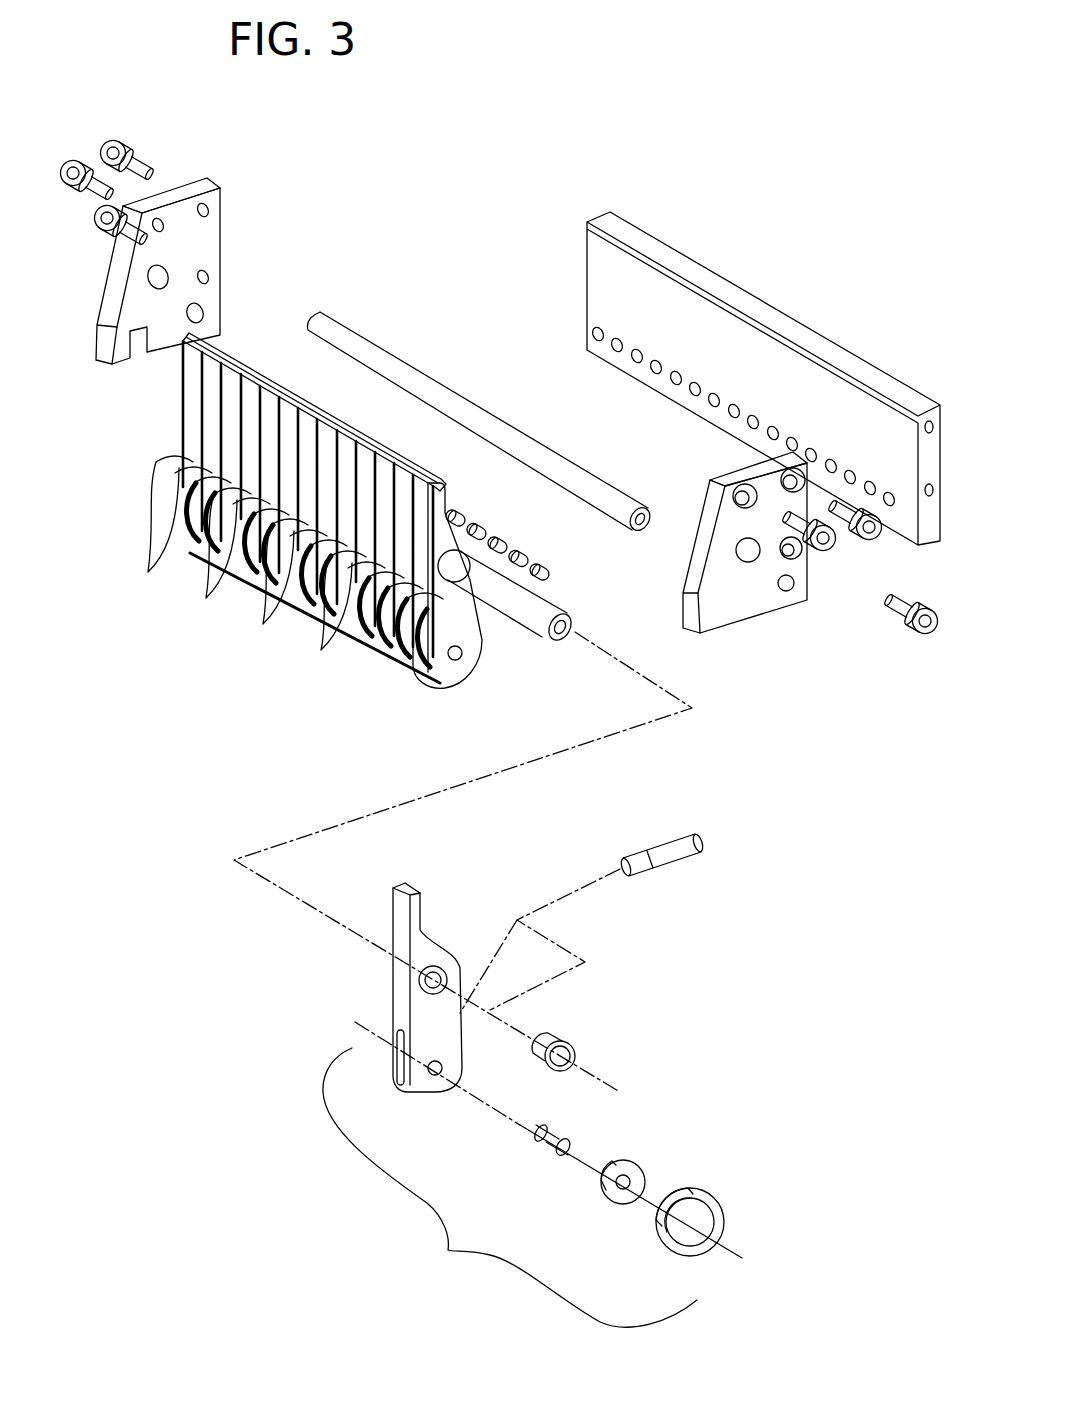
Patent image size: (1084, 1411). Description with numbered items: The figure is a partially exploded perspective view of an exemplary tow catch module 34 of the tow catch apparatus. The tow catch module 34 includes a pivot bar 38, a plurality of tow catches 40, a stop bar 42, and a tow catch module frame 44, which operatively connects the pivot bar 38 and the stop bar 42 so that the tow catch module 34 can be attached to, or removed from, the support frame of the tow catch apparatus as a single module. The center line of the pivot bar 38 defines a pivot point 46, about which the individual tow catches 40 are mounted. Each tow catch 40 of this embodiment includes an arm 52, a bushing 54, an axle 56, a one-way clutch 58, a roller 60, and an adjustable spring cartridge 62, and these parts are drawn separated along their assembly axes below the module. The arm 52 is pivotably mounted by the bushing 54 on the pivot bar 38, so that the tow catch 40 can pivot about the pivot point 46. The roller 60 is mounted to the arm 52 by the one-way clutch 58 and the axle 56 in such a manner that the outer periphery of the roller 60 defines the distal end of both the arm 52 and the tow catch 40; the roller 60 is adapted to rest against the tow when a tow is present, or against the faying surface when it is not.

The tow catch module 34 is at (505, 161).
The pivot bar 38 is at (172, 400).
The tow catch 40 is at (150, 570).
The stop bar 42 is at (430, 383).
The tow catch module frame 44 is at (205, 244).
The pivot point 46 is at (603, 676).
The arm 52 is at (405, 978).
The bushing 54 is at (555, 1032).
The axle 56 is at (540, 1150).
The one-way clutch 58 is at (632, 1166).
The roller 60 is at (722, 1205).
The adjustable spring cartridge 62 is at (670, 853).